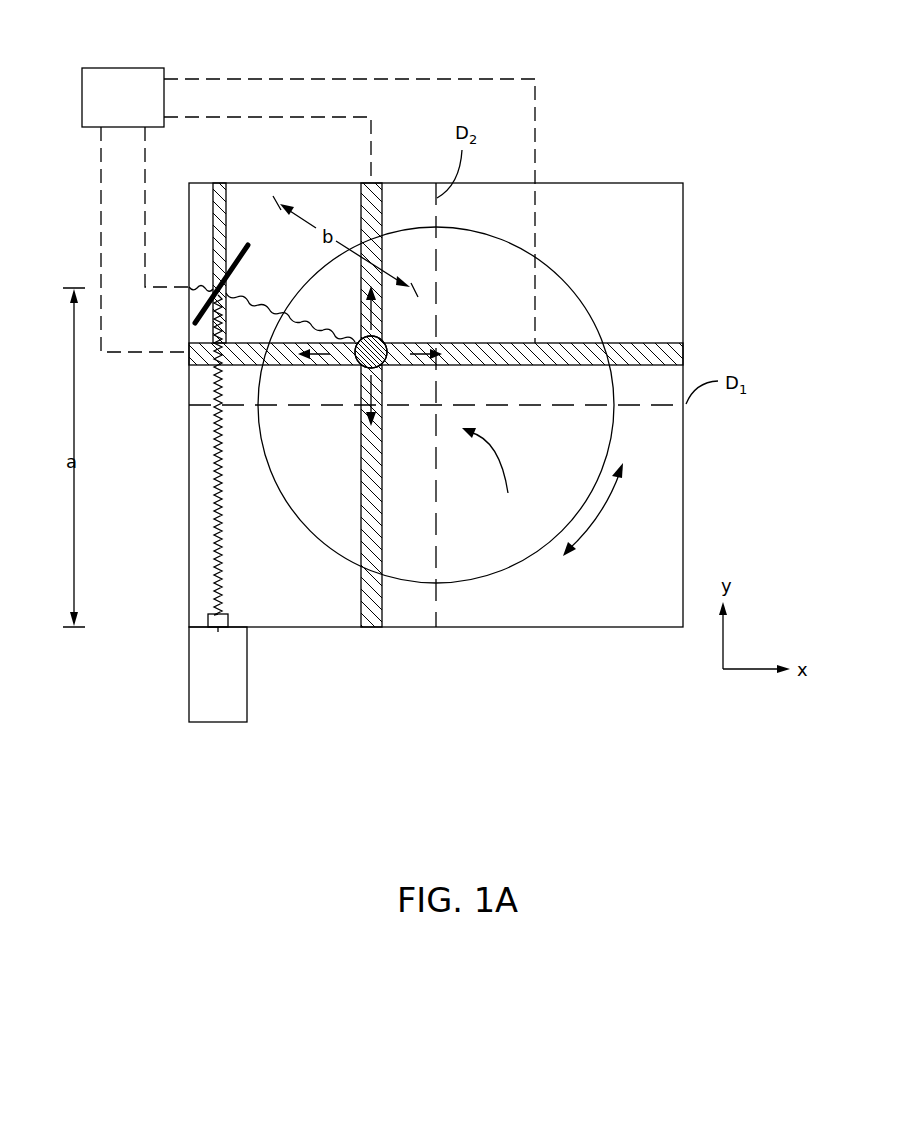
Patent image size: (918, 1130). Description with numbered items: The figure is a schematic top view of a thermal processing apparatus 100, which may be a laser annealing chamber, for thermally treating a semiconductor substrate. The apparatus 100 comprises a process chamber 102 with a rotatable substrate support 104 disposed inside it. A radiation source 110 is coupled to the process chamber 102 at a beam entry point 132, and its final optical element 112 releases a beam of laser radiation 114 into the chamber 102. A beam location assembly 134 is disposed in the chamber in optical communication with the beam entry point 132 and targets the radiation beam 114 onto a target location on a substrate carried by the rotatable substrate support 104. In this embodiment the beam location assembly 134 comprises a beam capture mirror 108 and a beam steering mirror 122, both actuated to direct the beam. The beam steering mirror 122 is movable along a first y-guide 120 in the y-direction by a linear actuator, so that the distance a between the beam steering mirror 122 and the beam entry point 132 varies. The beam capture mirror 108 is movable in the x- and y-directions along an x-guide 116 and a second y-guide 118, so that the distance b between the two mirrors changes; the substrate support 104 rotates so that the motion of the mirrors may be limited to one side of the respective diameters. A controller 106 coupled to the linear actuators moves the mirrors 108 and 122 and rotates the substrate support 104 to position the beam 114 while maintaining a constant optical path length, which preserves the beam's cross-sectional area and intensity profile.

The thermal processing apparatus 100 is at (660, 142).
The process chamber 102 is at (684, 226).
The rotatable substrate support 104 is at (583, 298).
The controller 106 is at (100, 68).
The beam capture mirror 108 is at (385, 340).
The radiation source 110 is at (247, 676).
The optical element 112 is at (228, 620).
The beam of laser radiation 114 is at (222, 556).
The x-guide 116 is at (648, 342).
The second y-guide 118 is at (386, 214).
The first y-guide 120 is at (228, 202).
The beam steering mirror 122 is at (236, 272).
The beam entry point 132 is at (218, 634).
The beam location assembly 134 is at (492, 478).